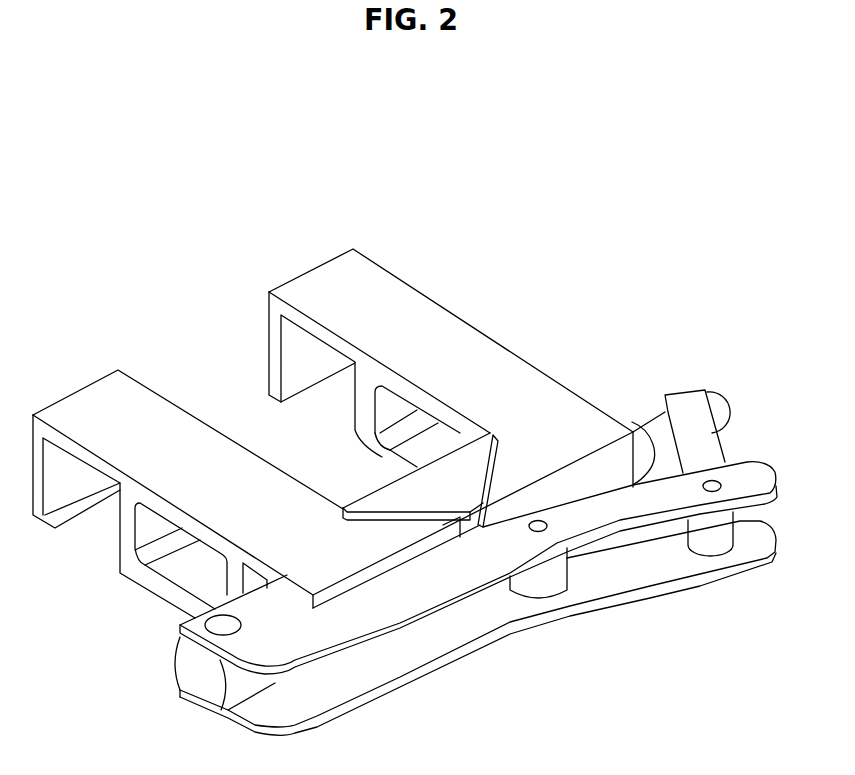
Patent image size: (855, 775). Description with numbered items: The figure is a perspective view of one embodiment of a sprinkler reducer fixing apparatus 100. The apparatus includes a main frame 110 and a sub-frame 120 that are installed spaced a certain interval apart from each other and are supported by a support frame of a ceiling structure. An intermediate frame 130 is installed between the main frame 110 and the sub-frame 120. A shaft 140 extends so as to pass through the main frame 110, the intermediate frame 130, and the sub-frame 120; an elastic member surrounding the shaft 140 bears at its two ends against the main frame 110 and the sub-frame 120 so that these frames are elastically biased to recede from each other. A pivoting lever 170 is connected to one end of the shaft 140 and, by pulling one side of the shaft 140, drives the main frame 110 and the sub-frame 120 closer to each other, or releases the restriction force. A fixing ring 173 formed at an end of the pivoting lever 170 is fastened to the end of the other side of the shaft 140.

The sprinkler reducer fixing apparatus 100 is at (157, 227).
The main frame 110 is at (93, 422).
The sub-frame 120 is at (473, 352).
The intermediate frame 130 is at (370, 503).
The shaft 140 is at (649, 424).
The pivoting lever 170 is at (412, 585).
The fixing ring 173 is at (714, 460).